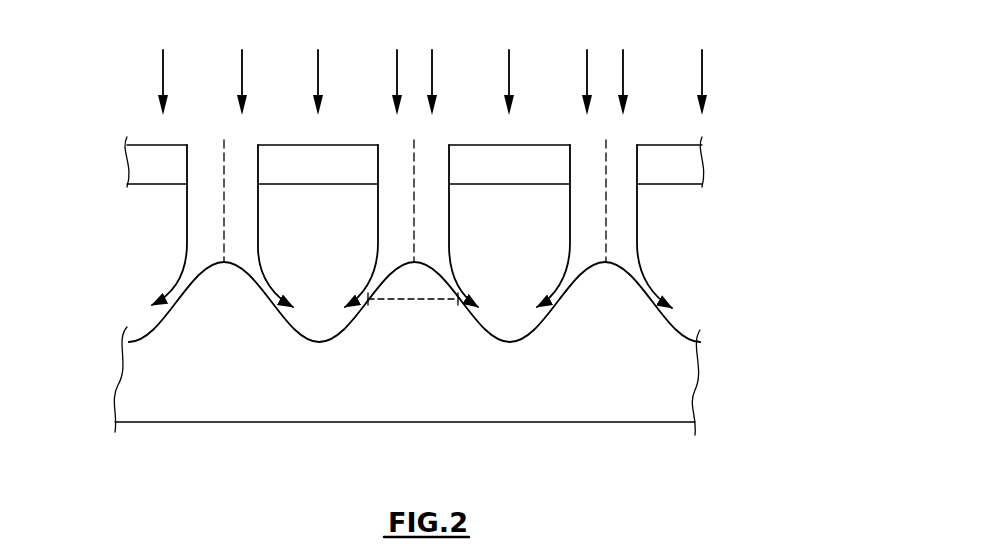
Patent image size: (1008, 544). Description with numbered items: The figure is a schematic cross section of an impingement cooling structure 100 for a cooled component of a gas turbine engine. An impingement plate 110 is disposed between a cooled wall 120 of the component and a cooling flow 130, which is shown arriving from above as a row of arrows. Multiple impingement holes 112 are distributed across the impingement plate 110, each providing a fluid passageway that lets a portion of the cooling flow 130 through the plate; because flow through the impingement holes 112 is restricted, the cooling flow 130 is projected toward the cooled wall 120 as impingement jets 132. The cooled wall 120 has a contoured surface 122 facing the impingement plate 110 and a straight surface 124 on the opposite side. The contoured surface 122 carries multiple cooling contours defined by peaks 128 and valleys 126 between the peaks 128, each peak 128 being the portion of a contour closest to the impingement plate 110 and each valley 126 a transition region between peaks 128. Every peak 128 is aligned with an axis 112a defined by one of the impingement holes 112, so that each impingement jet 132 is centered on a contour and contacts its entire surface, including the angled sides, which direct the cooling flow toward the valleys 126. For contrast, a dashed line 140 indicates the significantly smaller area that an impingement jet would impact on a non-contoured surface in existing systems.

The impingement cooling structure 100 is at (749, 117).
The impingement plate 110 is at (680, 166).
The impingement holes 112 is at (198, 172).
The axis 112a is at (224, 176).
The cooled wall 120 is at (268, 305).
The contoured surface 122 is at (675, 327).
The straight surface 124 is at (178, 305).
The valleys 126 is at (318, 343).
The peaks 128 is at (214, 262).
The cooling flow 130 is at (338, 60).
The impingement jets 132 is at (245, 230).
The dashed line 140 is at (443, 302).